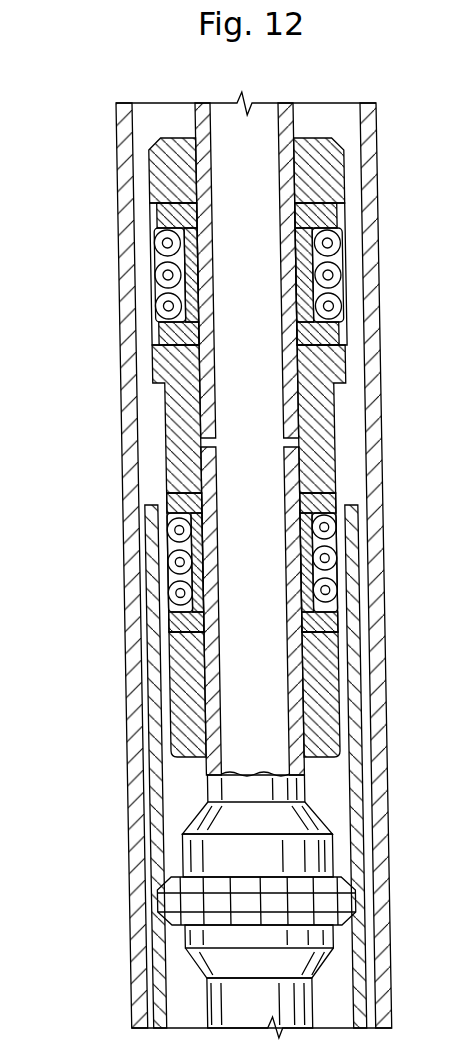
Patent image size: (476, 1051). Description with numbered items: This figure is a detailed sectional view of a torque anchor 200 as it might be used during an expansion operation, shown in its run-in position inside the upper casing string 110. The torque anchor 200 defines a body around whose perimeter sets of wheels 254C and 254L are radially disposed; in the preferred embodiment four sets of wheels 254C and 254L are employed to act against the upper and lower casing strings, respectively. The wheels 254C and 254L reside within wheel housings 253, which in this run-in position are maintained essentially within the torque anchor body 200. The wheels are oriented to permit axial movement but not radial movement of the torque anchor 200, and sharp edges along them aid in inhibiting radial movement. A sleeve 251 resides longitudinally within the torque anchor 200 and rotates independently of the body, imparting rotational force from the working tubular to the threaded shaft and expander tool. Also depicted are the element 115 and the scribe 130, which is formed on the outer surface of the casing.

The upper casing string 110 is at (377, 169).
The upper tubular member 115 is at (197, 134).
The scribe 130 is at (362, 723).
The torque anchor 200 is at (352, 441).
The sleeve 251 is at (288, 418).
The wheel housings 253 is at (310, 332).
The wheels 254C is at (155, 275).
The wheels 254L is at (177, 560).